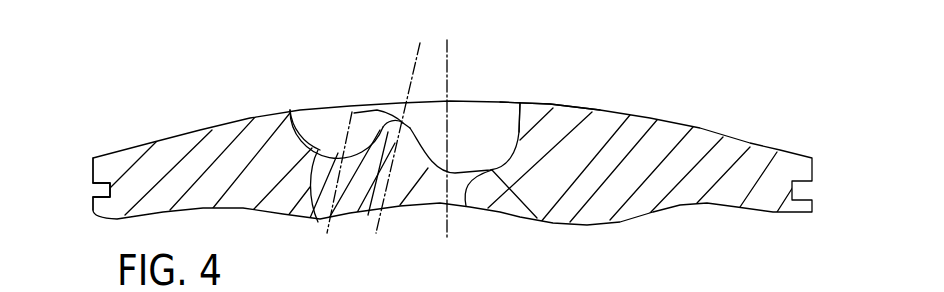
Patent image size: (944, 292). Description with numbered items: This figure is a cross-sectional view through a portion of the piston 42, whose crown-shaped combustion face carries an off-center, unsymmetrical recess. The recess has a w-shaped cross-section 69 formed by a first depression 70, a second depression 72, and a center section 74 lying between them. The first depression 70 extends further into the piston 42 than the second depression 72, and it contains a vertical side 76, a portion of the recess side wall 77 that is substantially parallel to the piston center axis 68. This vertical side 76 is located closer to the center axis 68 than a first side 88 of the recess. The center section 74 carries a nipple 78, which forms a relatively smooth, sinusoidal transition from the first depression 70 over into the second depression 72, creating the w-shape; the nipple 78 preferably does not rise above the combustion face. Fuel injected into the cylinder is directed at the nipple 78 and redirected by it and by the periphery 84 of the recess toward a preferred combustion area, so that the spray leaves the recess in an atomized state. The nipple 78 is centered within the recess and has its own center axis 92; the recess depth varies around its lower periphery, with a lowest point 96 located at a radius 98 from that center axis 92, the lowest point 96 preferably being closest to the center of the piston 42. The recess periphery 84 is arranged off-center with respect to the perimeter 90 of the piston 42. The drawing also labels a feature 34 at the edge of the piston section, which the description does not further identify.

The piston 42 is at (774, 81).
The cross-section 69 is at (570, 45).
The perimeter 90 is at (87, 140).
The notch 34 is at (94, 193).
The periphery 84 is at (291, 108).
The first side 88 is at (301, 103).
The nipple 78 is at (395, 105).
The radius 98 is at (377, 110).
The center axis 92 is at (414, 54).
The piston center axis 68 is at (449, 67).
The side wall 77 is at (517, 128).
The vertical side 76 is at (521, 117).
The second depression 72 is at (318, 222).
The center section 74 is at (368, 198).
The lowest point 96 is at (466, 206).
The first depression 70 is at (537, 218).